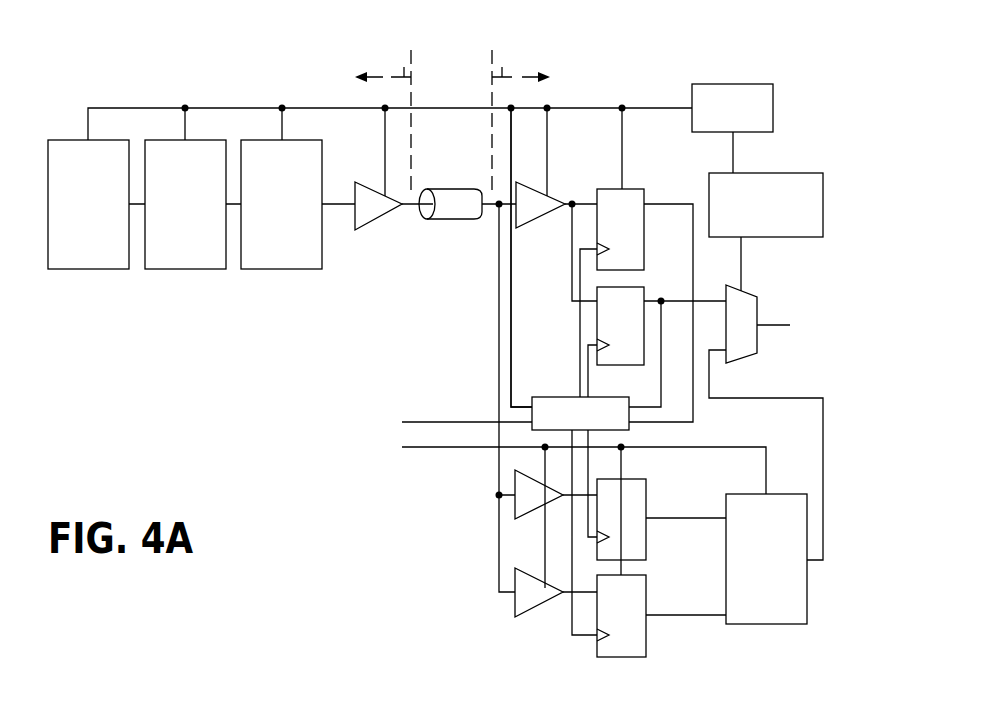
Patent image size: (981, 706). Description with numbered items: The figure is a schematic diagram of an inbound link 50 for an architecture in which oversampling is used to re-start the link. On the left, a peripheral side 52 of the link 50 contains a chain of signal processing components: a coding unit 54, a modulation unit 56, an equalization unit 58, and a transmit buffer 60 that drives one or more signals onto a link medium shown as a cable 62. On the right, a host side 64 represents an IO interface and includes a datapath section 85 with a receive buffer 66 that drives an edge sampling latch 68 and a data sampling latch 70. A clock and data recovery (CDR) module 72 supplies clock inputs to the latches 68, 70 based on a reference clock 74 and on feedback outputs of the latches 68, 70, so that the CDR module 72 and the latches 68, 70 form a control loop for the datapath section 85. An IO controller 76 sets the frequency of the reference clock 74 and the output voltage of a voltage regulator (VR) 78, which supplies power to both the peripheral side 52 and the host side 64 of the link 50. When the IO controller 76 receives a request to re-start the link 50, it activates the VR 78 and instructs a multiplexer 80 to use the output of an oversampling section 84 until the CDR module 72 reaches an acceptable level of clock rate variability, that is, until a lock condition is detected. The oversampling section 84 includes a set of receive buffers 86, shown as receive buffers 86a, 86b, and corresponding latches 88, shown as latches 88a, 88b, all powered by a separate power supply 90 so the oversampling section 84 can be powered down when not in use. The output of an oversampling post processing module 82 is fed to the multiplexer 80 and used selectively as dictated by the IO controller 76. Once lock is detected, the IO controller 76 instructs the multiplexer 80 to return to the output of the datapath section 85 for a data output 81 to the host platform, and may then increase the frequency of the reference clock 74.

The inbound link 50 is at (291, 56).
The peripheral side 52 is at (405, 63).
The coding unit 54 is at (80, 269).
The modulation unit 56 is at (177, 269).
The equalization unit 58 is at (280, 269).
The transmit buffer 60 is at (388, 216).
The cable 62 is at (467, 222).
The host side 64 is at (505, 63).
The receive buffer 66 is at (533, 228).
The edge sampling latch 68 is at (623, 189).
The data sampling latch 70 is at (647, 288).
The clock and data recovery module 72 is at (563, 397).
The reference clock 74 is at (418, 422).
The IO controller 76 is at (790, 173).
The voltage regulator 78 is at (708, 84).
The multiplexer 80 is at (760, 308).
The data output 81 is at (767, 328).
The oversampling module 82 is at (790, 624).
The oversampling section 84 is at (465, 548).
The datapath section 85 is at (480, 325).
The set of receive buffers 86 is at (543, 588).
The receive buffer 86a is at (530, 519).
The receive buffer 86b is at (532, 617).
The latches 88 is at (661, 587).
The latch 88a is at (648, 505).
The latch 88b is at (648, 600).
The separate power supply 90 is at (468, 449).